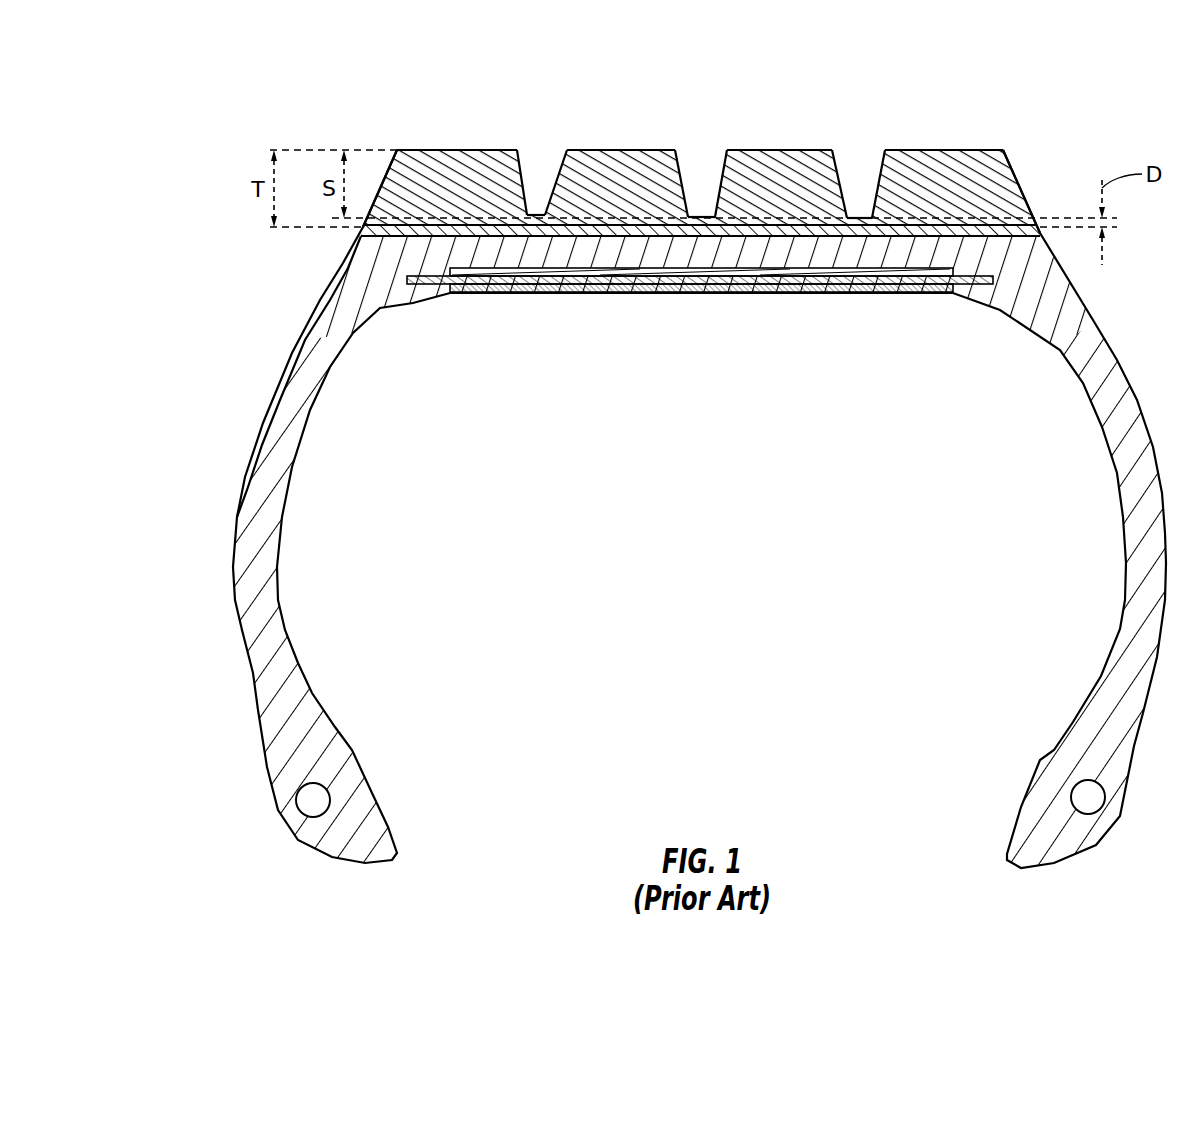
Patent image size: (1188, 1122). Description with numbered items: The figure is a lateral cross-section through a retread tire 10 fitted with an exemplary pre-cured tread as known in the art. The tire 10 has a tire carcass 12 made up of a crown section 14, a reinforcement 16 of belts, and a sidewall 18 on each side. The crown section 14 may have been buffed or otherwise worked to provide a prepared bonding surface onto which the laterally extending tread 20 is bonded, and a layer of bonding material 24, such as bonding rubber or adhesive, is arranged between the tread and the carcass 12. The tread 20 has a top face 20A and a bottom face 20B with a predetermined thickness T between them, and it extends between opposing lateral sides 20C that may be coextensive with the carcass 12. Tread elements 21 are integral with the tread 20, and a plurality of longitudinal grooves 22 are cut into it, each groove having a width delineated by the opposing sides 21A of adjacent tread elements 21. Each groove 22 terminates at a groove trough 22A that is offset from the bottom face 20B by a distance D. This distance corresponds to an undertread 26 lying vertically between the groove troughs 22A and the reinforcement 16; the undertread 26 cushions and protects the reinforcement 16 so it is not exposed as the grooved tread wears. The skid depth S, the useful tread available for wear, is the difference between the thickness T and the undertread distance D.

The retread tire 10 is at (238, 100).
The tire carcass 12 is at (292, 355).
The crown section 14 is at (530, 257).
The reinforcement 16 is at (777, 274).
The sidewall 18 is at (238, 503).
The tread 20 is at (957, 173).
The top face 20A is at (924, 150).
The bottom face 20B is at (945, 229).
The lateral sides 20C is at (387, 173).
The tread elements 21 is at (781, 150).
The opposing sides 21A is at (683, 167).
The longitudinal grooves 22 is at (547, 156).
The groove trough 22A is at (543, 213).
The bonding material 24 is at (638, 232).
The undertread 26 is at (866, 222).